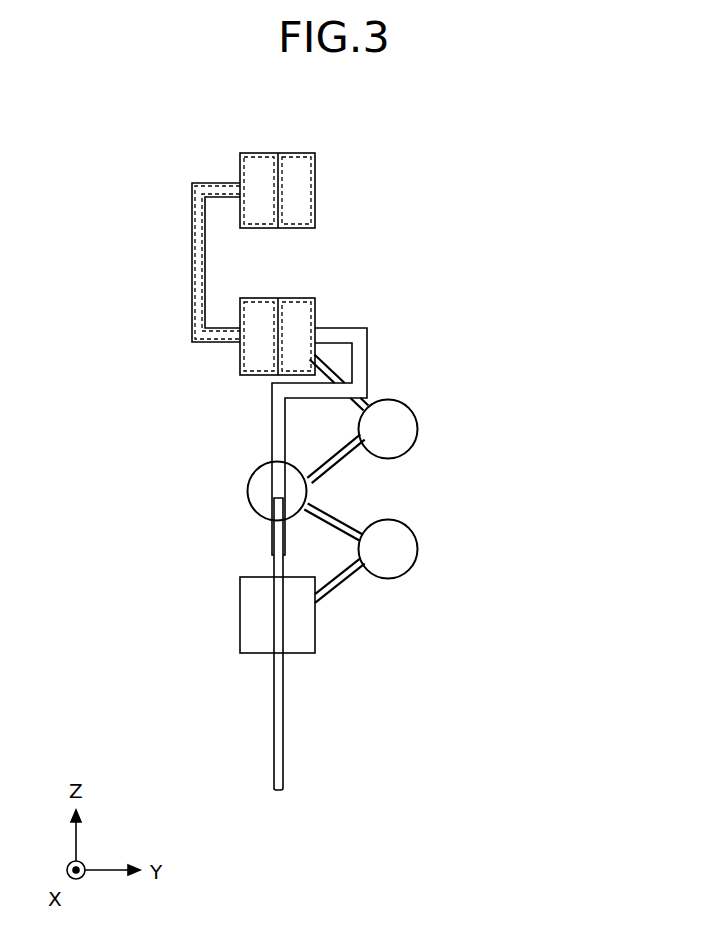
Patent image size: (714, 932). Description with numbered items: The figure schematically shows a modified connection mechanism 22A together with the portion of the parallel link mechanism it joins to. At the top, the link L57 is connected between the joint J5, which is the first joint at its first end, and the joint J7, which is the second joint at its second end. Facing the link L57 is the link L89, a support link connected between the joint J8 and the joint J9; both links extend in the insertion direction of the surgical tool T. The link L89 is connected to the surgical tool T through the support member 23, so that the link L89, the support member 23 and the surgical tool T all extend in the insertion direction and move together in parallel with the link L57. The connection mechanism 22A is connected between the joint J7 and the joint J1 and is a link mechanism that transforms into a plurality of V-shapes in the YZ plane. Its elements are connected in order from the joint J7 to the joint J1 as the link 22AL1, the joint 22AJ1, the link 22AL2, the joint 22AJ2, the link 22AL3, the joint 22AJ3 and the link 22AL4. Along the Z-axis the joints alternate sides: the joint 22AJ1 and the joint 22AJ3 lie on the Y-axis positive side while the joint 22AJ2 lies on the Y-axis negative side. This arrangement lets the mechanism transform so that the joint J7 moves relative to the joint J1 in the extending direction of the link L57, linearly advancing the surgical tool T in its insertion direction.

The joint J5 is at (302, 150).
The joint J8 is at (300, 187).
The joint J7 is at (302, 296).
The joint J9 is at (302, 312).
The link L57 is at (195, 231).
The link L89 is at (199, 288).
The support member 23 is at (278, 445).
The connection mechanism 22A is at (433, 480).
The link 22AL1 is at (366, 403).
The link 22AL2 is at (342, 453).
The link 22AL3 is at (345, 528).
The link 22AL4 is at (345, 573).
The joint 22AJ1 is at (406, 429).
The joint 22AJ2 is at (297, 492).
The joint 22AJ3 is at (448, 549).
The joint J1 is at (252, 615).
The surgical tool T is at (278, 726).